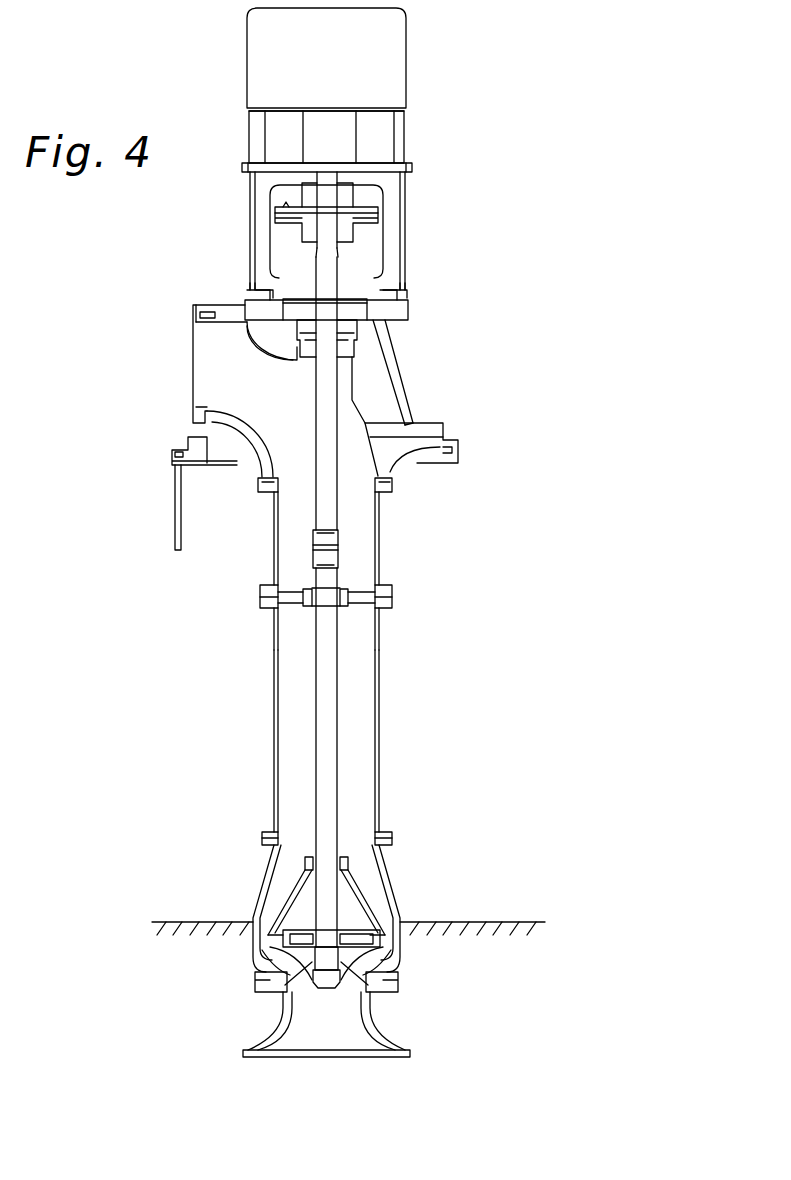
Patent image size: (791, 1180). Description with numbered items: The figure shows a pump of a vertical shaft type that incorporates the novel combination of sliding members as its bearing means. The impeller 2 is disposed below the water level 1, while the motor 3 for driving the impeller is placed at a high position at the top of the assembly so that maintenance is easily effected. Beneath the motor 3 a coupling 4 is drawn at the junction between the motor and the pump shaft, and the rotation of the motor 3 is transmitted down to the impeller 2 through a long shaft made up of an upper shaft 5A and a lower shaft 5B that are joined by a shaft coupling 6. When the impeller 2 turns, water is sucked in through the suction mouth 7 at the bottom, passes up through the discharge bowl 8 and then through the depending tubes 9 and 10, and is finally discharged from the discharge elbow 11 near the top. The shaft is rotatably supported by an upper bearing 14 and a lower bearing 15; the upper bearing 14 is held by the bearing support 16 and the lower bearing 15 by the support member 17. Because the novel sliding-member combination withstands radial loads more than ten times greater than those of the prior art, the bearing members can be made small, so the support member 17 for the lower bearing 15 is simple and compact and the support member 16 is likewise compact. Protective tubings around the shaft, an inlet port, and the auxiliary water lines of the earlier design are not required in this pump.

The water level 1 is at (528, 922).
The impeller 2 is at (377, 968).
The motor 3 is at (401, 133).
The coupling 4 is at (378, 212).
The upper shaft 5A is at (332, 498).
The lower shaft 5B is at (333, 723).
The shaft coupling 6 is at (338, 545).
The suction mouth 7 is at (275, 1030).
The discharge bowl 8 is at (398, 907).
The depending tube 9 is at (378, 780).
The depending tube 10 is at (375, 567).
The discharge elbow 11 is at (203, 370).
The upper bearing 14 is at (357, 581).
The lower bearing 15 is at (345, 915).
The bearing support 16 is at (357, 603).
The support member 17 is at (287, 920).